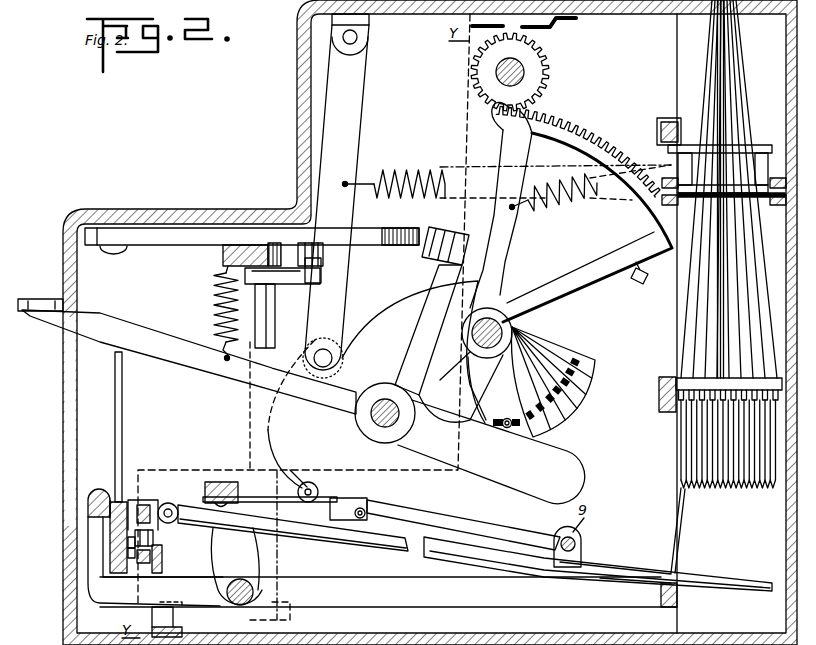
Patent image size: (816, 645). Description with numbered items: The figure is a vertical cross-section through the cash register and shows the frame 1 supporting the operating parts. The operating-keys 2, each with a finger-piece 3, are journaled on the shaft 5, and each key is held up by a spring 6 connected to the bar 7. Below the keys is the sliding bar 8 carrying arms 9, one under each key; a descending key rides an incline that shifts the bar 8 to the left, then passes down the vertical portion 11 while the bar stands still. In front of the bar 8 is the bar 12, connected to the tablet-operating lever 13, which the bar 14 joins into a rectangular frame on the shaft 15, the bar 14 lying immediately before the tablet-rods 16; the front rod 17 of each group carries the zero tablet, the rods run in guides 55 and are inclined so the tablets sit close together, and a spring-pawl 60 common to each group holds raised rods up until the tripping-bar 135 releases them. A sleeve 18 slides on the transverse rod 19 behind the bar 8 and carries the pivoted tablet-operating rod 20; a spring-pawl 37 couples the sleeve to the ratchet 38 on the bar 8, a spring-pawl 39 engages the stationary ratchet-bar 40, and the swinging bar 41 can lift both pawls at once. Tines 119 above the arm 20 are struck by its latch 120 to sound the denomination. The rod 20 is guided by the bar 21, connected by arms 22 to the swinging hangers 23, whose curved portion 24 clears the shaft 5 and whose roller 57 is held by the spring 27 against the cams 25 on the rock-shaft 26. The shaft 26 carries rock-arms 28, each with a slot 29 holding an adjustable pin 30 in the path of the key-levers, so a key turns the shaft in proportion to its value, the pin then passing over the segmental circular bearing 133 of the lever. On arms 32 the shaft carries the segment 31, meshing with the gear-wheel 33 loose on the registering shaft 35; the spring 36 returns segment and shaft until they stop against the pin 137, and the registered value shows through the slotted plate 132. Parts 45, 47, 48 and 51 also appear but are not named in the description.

The frame 1 is at (300, 128).
The operating-keys 2 is at (210, 370).
The finger-piece 3 is at (50, 300).
The shaft 5 is at (370, 432).
The spring 6 is at (213, 318).
The bar 7 is at (222, 258).
The bar 8 is at (113, 562).
The arms 9 is at (123, 432).
The vertical portion 11 is at (121, 502).
The bar 12 is at (150, 535).
The tablet-operating lever 13 is at (388, 592).
The bar 14 is at (686, 601).
The shaft 15 is at (262, 582).
The tablet-rods 16 is at (737, 122).
The front rod 17 is at (690, 308).
The sleeve 18 is at (150, 502).
The rod 19 is at (170, 506).
The tablet-operating rod 20 is at (326, 548).
The bar 21 is at (583, 541).
The arms 22 is at (466, 530).
The swinging hangers 23 is at (358, 268).
The curved portion 24 is at (267, 412).
The cams 25 is at (398, 302).
The rock-shaft 26 is at (472, 347).
The spring 27 is at (404, 170).
The rock-arms 28 is at (562, 356).
The slot 29 is at (580, 364).
The pin 30 is at (490, 392).
The segment 31 is at (575, 128).
The arms 32 is at (538, 246).
The gear-wheel 33 is at (540, 70).
The shaft 35 is at (497, 72).
The spring 36 is at (588, 200).
The spring-pawl 37 is at (128, 541).
The ratchet-bar 38 is at (130, 550).
The spring-pawl 39 is at (155, 541).
The stationary ratchet-bar 40 is at (152, 556).
The swinging bar 41 is at (163, 568).
The bar 45 is at (196, 246).
The block 47 is at (470, 229).
The lever 48 is at (449, 343).
The bracket 51 is at (172, 602).
The guides 55 is at (659, 394).
The roller 57 is at (342, 352).
The spring-pawl 60 is at (752, 148).
The musical tines 119 is at (262, 490).
The latch 120 is at (338, 498).
The slotted plate 132 is at (560, 27).
The segmental circular bearing 133 is at (562, 478).
The tripping-bar 135 is at (668, 122).
The pin 137 is at (644, 283).